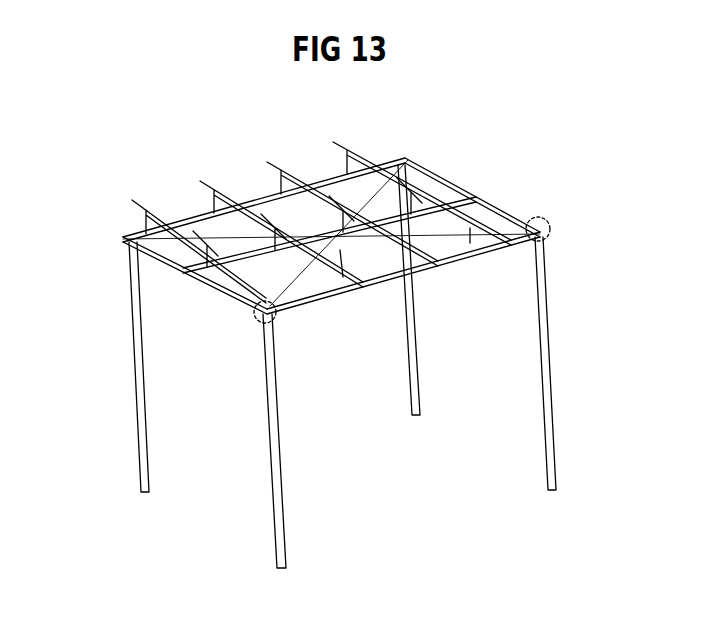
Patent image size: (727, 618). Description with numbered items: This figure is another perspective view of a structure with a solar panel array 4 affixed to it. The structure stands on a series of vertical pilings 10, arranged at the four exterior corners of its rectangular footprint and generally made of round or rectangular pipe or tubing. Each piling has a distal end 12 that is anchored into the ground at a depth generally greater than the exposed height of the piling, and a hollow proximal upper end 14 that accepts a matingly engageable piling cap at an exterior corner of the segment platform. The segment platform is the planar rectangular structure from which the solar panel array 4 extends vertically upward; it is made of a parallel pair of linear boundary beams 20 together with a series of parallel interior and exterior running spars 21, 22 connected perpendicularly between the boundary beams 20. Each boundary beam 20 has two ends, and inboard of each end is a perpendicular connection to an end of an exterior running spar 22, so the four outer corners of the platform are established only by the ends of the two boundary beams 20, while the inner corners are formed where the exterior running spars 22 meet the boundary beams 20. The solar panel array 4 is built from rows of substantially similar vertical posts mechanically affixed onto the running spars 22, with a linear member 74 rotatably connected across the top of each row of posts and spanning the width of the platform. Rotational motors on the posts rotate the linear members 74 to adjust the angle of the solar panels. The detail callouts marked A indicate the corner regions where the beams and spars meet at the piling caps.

The solar panel array 4 is at (228, 191).
The vertical pilings 10 is at (551, 417).
The distal ends 12 is at (286, 564).
The proximal upper ends 14 is at (127, 253).
The boundary beams 20 is at (450, 181).
The interior running spars 21 is at (477, 200).
The exterior running spars 22 is at (447, 261).
The linear member 74 is at (264, 294).
The detail area A is at (279, 321).